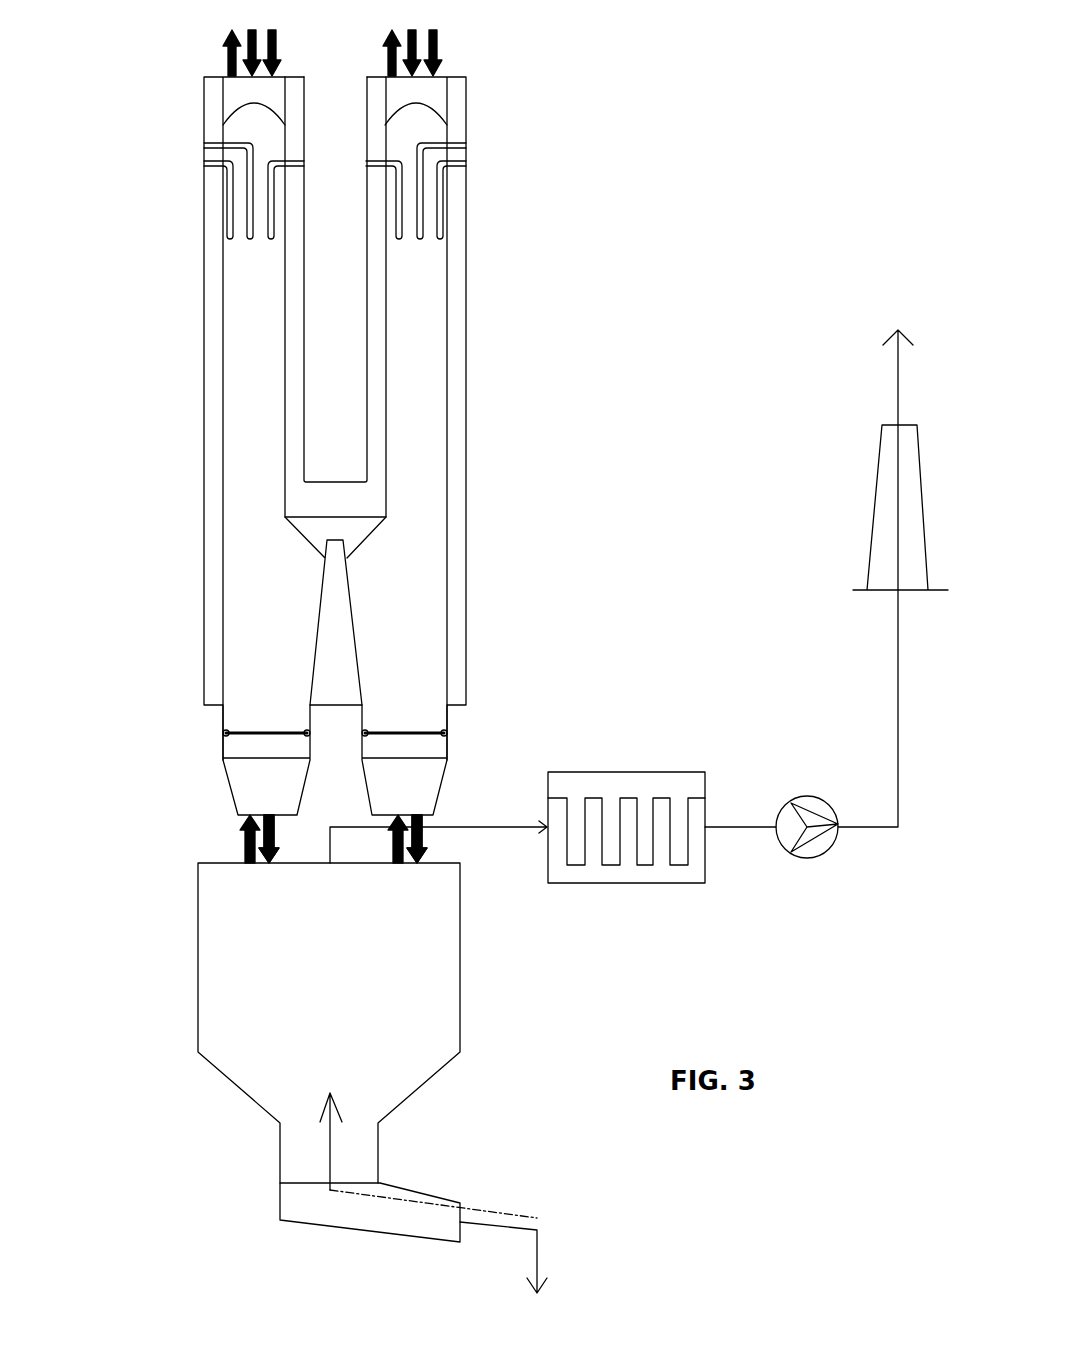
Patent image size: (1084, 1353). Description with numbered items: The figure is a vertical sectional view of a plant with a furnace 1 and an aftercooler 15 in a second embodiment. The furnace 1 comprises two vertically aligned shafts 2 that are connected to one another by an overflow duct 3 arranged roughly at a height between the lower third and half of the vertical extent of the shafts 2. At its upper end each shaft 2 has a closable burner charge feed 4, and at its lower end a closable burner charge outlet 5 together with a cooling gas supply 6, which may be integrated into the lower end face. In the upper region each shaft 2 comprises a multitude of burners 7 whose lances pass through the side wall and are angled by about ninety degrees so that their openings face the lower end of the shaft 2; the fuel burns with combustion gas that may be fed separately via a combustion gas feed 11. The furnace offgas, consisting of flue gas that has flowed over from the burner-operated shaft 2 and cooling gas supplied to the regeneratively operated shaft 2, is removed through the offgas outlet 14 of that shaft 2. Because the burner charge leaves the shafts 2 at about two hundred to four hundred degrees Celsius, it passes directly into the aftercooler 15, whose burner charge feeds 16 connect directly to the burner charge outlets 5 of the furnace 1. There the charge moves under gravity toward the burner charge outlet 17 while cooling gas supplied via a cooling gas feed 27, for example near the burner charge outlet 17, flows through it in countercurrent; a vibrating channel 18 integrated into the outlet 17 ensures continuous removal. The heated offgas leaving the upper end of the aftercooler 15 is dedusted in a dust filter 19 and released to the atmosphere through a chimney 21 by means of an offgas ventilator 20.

The furnace 1 is at (138, 103).
The shaft 2 is at (368, 73).
The overflow duct 3 is at (343, 528).
The burner charge feed 4 is at (333, 38).
The burner charge outlet 5 is at (366, 839).
The cooling gas supply 6 is at (335, 784).
The burner 7 is at (270, 171).
The combustion gas feed 11 is at (359, 38).
The offgas outlet 14 is at (303, 38).
The aftercooler 15 is at (220, 1072).
The burner charge feed of the aftercooler 16 is at (343, 839).
The burner charge outlet of the aftercooler 17 is at (516, 1257).
The vibrating channel 18 is at (375, 1232).
The dust filter 19 is at (662, 807).
The offgas ventilator 20 is at (837, 724).
The chimney 21 is at (891, 460).
The cooling gas feed 27 is at (450, 1207).